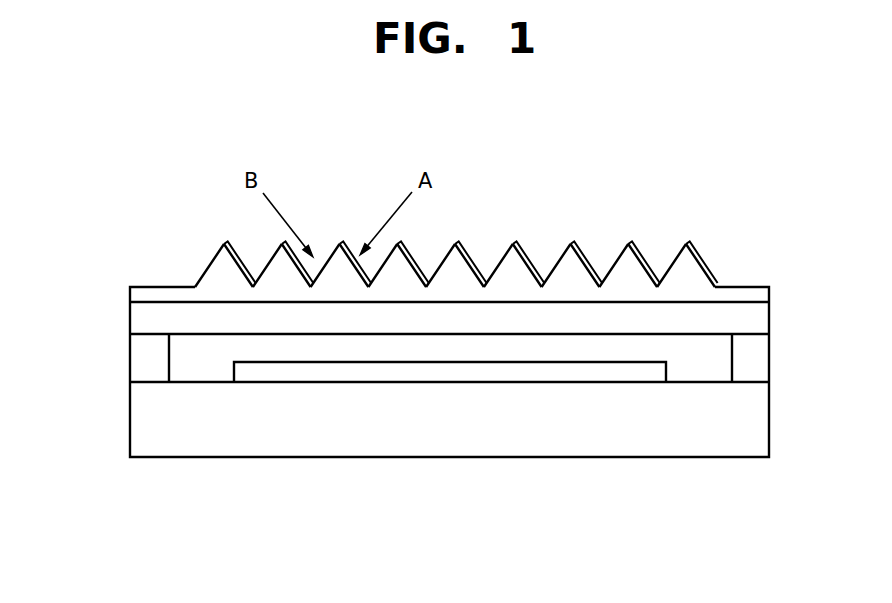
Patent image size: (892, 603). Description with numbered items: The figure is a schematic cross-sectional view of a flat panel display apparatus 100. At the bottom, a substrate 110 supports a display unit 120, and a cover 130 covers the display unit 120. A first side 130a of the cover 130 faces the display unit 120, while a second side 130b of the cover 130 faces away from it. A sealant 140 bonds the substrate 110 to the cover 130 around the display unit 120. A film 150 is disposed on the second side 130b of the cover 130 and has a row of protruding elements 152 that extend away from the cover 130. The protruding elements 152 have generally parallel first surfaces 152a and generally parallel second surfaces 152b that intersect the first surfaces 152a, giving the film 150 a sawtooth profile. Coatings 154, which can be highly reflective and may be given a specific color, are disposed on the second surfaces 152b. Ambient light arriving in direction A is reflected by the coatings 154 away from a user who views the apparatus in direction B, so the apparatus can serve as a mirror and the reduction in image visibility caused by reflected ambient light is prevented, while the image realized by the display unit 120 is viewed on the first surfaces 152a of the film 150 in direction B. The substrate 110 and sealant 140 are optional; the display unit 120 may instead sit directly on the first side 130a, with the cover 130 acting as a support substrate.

The flat panel display apparatus 100 is at (442, 363).
The substrate 110 is at (763, 425).
The display unit 120 is at (454, 372).
The cover 130 is at (442, 324).
The first side of the cover 130a is at (188, 336).
The second side of the cover 130b is at (162, 302).
The sealant 140 is at (763, 360).
The film 150 is at (493, 233).
The protruding elements 152 is at (455, 225).
The first surfaces 152a is at (557, 262).
The second surfaces 152b is at (582, 260).
The coatings 154 is at (643, 260).